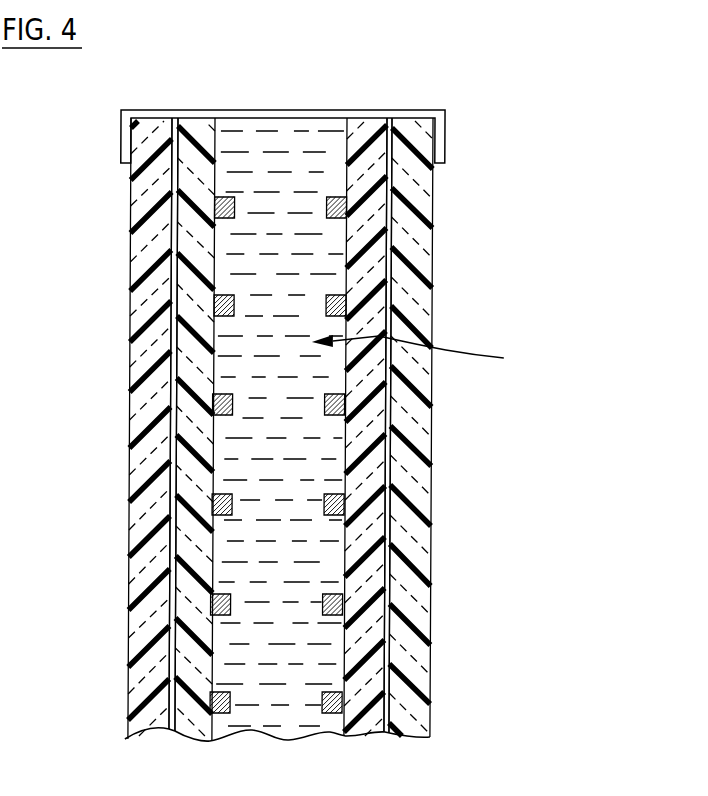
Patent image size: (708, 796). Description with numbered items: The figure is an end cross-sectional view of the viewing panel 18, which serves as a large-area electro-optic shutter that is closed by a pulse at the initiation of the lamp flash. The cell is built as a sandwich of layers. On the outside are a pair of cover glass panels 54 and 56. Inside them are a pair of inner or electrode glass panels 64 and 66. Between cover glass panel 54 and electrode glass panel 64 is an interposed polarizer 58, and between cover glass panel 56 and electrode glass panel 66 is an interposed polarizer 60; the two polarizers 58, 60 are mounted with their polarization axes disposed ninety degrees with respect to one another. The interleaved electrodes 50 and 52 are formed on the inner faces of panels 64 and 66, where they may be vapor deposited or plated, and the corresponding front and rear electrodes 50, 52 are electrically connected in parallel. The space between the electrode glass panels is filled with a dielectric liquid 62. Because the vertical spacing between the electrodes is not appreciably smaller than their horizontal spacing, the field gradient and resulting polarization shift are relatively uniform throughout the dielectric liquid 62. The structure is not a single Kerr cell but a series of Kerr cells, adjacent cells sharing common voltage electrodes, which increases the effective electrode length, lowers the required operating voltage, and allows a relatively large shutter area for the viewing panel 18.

The viewing panel 18 is at (337, 109).
The electrode 50 is at (333, 197).
The electrode 52 is at (327, 299).
The cover glass panel 54 is at (143, 210).
The cover glass panel 56 is at (420, 238).
The polarizer 58 is at (170, 462).
The polarizer 60 is at (387, 523).
The dielectric liquid 62 is at (275, 720).
The inner or electrode glass panel 64 is at (221, 92).
The inner or electrode glass panel 66 is at (364, 122).